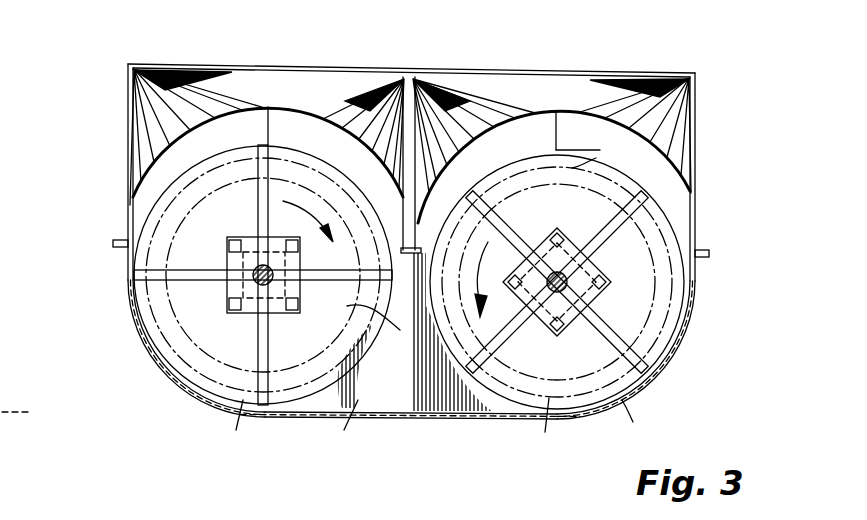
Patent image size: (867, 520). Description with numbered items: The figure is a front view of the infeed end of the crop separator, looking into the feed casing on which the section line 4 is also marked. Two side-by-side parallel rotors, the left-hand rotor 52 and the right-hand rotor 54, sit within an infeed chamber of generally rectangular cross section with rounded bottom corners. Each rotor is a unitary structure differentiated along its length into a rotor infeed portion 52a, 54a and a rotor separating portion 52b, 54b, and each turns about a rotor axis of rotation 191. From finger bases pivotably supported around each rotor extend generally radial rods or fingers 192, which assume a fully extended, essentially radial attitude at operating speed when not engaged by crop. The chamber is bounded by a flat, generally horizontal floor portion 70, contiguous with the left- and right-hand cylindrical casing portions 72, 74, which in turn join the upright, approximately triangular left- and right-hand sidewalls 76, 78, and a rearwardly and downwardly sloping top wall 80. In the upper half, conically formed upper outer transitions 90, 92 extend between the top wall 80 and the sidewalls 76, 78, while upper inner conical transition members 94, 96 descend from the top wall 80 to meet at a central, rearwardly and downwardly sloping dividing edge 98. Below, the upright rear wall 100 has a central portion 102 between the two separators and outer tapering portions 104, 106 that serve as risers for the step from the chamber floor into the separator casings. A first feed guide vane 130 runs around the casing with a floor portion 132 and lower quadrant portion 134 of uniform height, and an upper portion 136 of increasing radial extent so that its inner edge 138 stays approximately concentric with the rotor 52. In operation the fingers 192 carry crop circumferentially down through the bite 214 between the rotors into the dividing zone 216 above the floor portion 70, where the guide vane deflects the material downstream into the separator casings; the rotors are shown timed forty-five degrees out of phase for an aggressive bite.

The section line 4- 4 is at (150, 25).
The left-hand rotor 52 is at (645, 314).
The rotor infeed portion 52a is at (495, 170).
The rotor separating portion 52b is at (514, 184).
The right-hand rotor 54 is at (200, 338).
The rotor infeed portion 54a is at (316, 160).
The rotor separating portion 54b is at (183, 222).
The floor portion 70 is at (362, 421).
The left-hand cylindrical casing portion 72 is at (660, 366).
The right-hand cylindrical casing portion 74 is at (180, 390).
The left-hand sidewall 76 is at (695, 152).
The right-hand sidewall 78 is at (128, 163).
The top wall 80 is at (510, 70).
The left-hand upper outer conical transition 90 is at (674, 118).
The right-hand upper outer conical transition 92 is at (150, 120).
The left-hand upper inner conical transition member 94 is at (453, 100).
The right-hand upper inner conical transition member 96 is at (366, 106).
The dividing edge 98 is at (410, 130).
The rear wall 100 is at (412, 400).
The central portion of rear wall 102 is at (333, 431).
The left-hand outer tapering portion 104 is at (567, 424).
The right-hand outer tapering portion 106 is at (221, 424).
The first feed guide vane 130 is at (478, 412).
The floor portion of feed guide vane 132 is at (424, 388).
The lower quadrant portion of feed guide vane 134 is at (644, 416).
The upper portion of feed guide vane 136 is at (578, 131).
The inner edge of vane upper portion 138 is at (566, 169).
The rotor axis of rotation 191 is at (554, 296).
The fingers 192 is at (262, 205).
The bite 214 is at (384, 258).
The dividing zone 216 is at (356, 313).